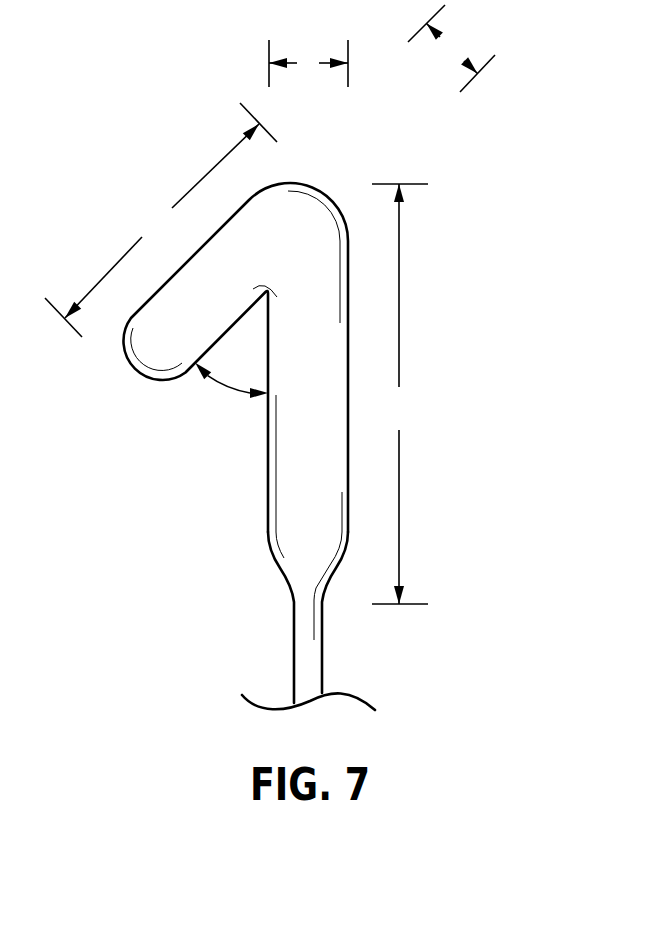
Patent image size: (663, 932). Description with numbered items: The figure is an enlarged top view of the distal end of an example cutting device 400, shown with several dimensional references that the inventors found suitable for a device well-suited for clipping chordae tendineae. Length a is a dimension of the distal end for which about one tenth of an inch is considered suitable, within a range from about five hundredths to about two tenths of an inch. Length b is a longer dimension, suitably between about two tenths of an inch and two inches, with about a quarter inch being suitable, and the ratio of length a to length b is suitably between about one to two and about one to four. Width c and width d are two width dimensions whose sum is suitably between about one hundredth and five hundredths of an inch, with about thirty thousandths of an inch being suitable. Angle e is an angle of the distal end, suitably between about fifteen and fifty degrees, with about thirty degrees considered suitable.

The cutting device 400 is at (156, 466).
The length a is at (161, 220).
The length b is at (400, 394).
The width c is at (308, 63).
The width d is at (451, 48).
The angle e is at (228, 386).